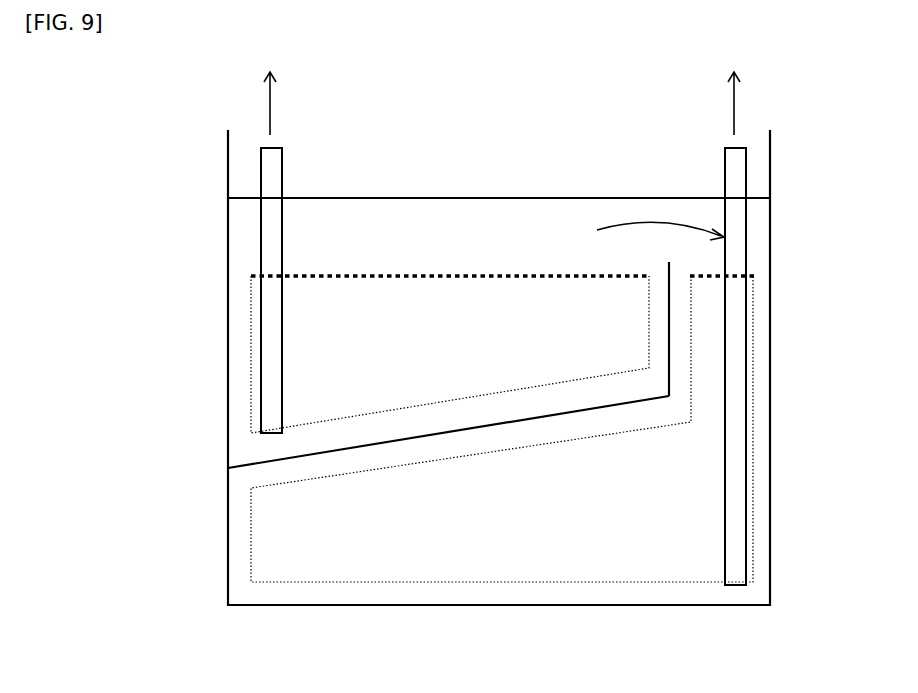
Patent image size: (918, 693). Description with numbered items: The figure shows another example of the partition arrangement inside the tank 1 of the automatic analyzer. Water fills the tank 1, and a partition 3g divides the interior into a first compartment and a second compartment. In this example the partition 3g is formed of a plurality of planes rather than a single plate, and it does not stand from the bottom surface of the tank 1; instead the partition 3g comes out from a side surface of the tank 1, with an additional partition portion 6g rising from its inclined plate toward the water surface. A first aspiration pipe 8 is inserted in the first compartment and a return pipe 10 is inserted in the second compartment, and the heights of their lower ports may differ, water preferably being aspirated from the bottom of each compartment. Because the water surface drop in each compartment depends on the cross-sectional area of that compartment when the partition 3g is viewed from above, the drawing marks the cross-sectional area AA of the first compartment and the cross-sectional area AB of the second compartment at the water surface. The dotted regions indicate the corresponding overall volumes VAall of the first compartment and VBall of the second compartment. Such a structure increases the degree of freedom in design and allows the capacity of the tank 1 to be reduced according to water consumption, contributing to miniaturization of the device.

The tank 1 is at (228, 537).
The first aspiration pipe 8 is at (262, 248).
The return pipe 10 is at (745, 329).
The partition plate 6g is at (663, 250).
The partition 3g is at (375, 447).
The cross-sectional area of the first compartment AA is at (456, 283).
The cross-sectional area of the second compartment AB is at (712, 278).
The volume of region A VAall is at (365, 363).
The volume of region B VBall is at (622, 518).